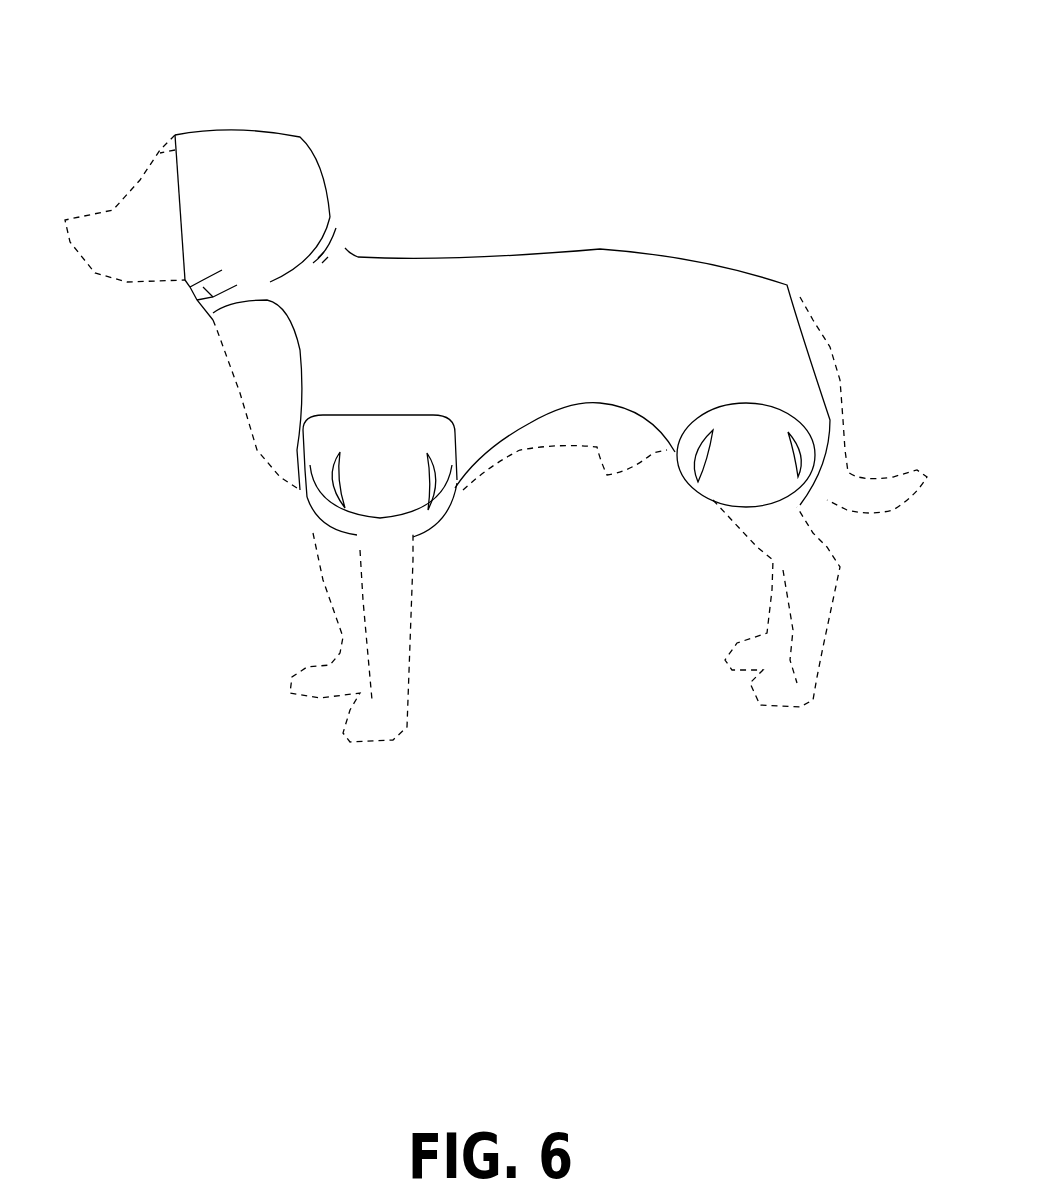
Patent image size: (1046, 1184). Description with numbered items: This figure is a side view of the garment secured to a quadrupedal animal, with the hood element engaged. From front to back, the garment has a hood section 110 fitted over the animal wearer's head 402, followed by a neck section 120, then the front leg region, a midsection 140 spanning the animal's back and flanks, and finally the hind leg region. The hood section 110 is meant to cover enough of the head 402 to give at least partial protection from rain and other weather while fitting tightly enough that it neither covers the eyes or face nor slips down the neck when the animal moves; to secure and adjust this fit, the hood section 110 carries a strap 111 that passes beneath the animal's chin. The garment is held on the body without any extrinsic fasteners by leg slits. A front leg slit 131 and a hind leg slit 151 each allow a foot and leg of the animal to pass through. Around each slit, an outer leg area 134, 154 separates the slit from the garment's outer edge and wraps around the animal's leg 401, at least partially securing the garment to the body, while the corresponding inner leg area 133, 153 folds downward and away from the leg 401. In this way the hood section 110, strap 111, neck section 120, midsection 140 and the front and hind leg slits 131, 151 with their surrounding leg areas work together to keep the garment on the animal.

The hood section 110 is at (287, 186).
The strap 111 is at (220, 292).
The neck section 120 is at (303, 300).
The front leg slit 131 is at (330, 478).
The inner leg area 133 is at (432, 510).
The outer leg area 134 is at (387, 477).
The midsection 140 is at (548, 296).
The hind leg slit 151 is at (705, 465).
The inner leg area 153 is at (762, 467).
The outer leg area 154 is at (685, 462).
The animal's leg 401 is at (812, 625).
The animal wearer's head 402 is at (132, 230).